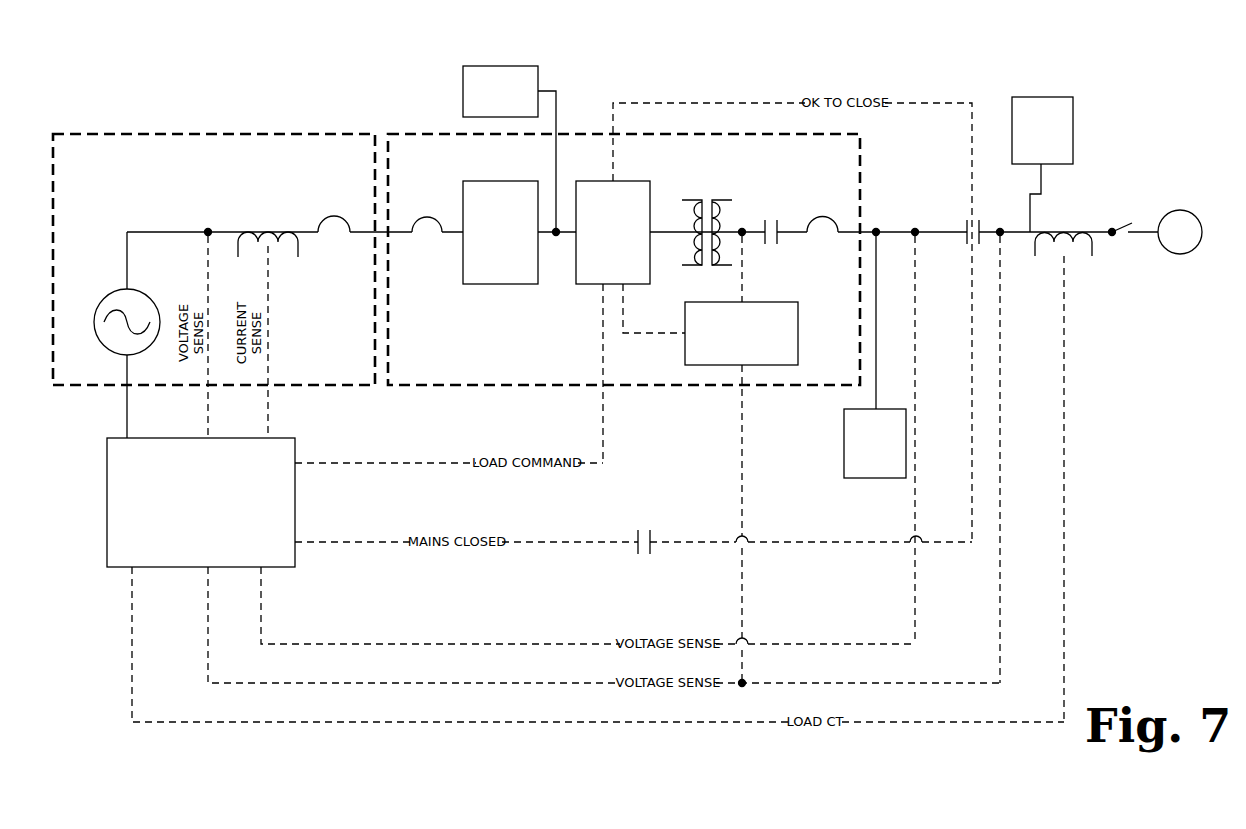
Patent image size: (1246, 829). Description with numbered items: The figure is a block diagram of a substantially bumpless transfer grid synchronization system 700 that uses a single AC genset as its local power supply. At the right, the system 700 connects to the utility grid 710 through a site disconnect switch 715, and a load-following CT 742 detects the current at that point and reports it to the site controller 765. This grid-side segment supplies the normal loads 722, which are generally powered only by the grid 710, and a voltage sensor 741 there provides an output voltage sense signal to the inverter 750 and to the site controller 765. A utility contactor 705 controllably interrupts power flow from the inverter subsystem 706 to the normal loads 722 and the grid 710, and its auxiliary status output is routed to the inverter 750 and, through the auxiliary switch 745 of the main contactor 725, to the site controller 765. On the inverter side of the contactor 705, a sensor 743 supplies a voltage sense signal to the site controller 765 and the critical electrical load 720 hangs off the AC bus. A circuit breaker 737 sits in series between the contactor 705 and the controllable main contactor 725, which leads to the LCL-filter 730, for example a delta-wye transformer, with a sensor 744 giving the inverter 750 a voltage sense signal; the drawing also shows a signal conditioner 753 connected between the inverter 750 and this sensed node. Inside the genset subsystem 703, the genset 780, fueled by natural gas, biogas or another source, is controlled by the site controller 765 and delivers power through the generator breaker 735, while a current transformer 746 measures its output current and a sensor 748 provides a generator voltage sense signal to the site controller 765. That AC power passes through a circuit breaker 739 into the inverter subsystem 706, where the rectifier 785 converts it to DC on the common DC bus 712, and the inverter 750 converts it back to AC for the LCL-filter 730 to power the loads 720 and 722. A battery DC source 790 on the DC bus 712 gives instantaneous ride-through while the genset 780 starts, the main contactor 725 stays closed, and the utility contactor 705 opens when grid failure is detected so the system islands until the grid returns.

The system 700 is at (262, 93).
The genset subsystem 703 is at (127, 134).
The contactor (52U) 705 is at (968, 229).
The inverter subsystem 706 is at (745, 134).
The utility grid 710 is at (1196, 212).
The common DC bus 712 is at (556, 236).
The site disconnect switch 715 is at (1112, 220).
The critical electrical load 720 is at (864, 469).
The normal loads 722 is at (1031, 157).
The M1 contactor 725 is at (782, 237).
The LCL-filter 730 is at (708, 262).
The generator breaker 735 is at (334, 195).
The circuit breaker 737 is at (845, 224).
The circuit breaker 739 is at (436, 236).
The voltage sensor 741 is at (1001, 228).
The load-following CT 742 is at (1070, 255).
The sensor 743 is at (916, 228).
The sensor 744 is at (744, 228).
The auxiliary switch 745 is at (672, 530).
The current transformer 746 is at (270, 253).
The sensor 748 is at (208, 222).
The inverter 750 is at (602, 263).
The signal conditioner 753 is at (730, 360).
The site controller 765 is at (190, 525).
The genset 780 is at (132, 289).
The rectifier 785 is at (489, 263).
The battery DC source 790 is at (489, 113).